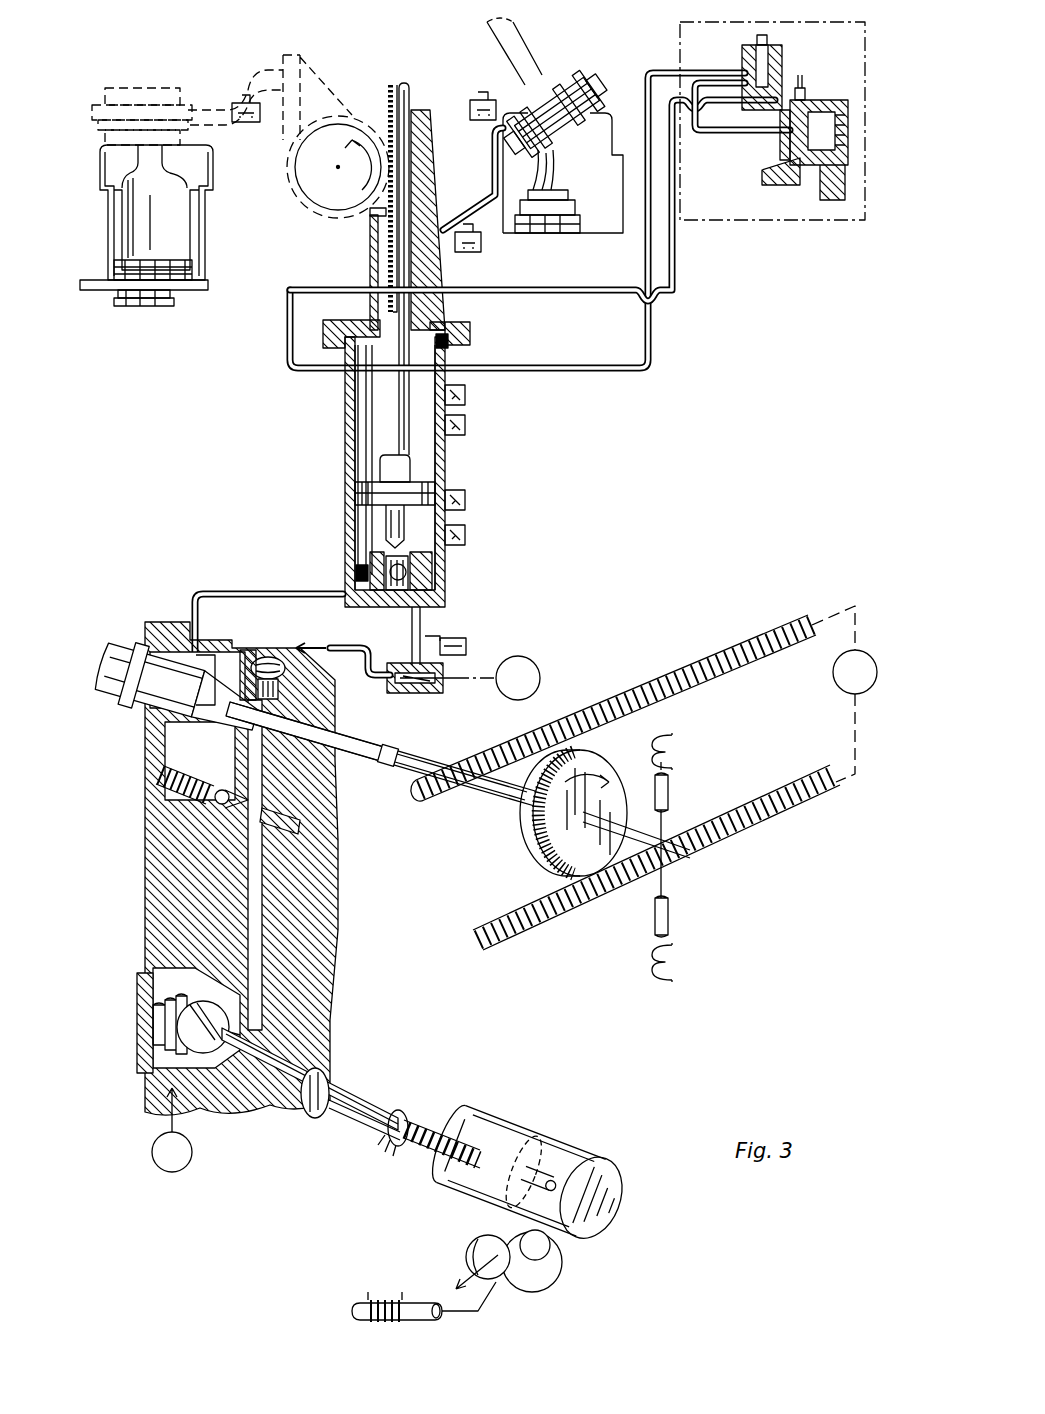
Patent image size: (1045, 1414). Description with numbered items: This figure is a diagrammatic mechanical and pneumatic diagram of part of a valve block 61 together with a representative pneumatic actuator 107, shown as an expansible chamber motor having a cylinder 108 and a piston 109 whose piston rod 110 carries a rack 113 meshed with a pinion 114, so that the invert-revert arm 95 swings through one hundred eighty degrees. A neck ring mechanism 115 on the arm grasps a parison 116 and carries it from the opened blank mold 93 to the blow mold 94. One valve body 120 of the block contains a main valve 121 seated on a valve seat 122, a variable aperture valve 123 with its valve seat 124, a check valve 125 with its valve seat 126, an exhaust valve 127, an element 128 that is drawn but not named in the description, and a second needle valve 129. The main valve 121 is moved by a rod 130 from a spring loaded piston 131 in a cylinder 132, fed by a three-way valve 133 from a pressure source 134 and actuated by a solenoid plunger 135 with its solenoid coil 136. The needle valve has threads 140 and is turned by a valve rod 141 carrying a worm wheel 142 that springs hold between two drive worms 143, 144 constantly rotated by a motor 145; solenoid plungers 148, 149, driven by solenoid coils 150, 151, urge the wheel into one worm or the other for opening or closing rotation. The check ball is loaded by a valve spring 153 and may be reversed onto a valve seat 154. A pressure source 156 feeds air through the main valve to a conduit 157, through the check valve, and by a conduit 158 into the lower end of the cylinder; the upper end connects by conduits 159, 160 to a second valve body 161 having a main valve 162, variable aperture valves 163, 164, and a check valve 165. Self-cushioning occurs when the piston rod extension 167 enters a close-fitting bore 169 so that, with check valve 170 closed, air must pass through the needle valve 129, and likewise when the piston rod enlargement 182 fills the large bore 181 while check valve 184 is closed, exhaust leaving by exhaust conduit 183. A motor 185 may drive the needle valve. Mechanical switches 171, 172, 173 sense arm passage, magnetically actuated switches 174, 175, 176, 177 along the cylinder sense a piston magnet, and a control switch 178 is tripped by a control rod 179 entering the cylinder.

The valve block 61 is at (414, 890).
The blank mold 93 is at (600, 118).
The blow mold 94 is at (100, 176).
The invert-revert arm 95 is at (473, 200).
The pneumatic actuator 107 is at (346, 415).
The cylinder 108 is at (346, 440).
The piston 109 is at (445, 470).
The piston rod 110 is at (405, 90).
The rack 113 is at (390, 90).
The pinion 114 is at (342, 215).
The neck ring mechanism 115 is at (570, 78).
The parison 116 is at (540, 24).
The valve body 120 is at (145, 852).
The main valve 121 is at (150, 1045).
The valve seat 122 is at (236, 1108).
The variable aperture valve 123 is at (200, 654).
The valve seat 124 is at (232, 688).
The check valve 125 is at (205, 800).
The valve seat 126 is at (232, 780).
The exhaust valve 127 is at (322, 1120).
The adjusting screw 128 is at (266, 658).
The needle valve 129 is at (436, 694).
The rod 130 is at (365, 1095).
The spring loaded piston 131 is at (513, 1116).
The cylinder 132 is at (572, 1142).
The three-way valve 133 is at (470, 1262).
The pressure source 134 is at (566, 1250).
The solenoid plunger 135 is at (420, 1322).
The solenoid coil 136 is at (392, 1300).
The threads 140 is at (142, 702).
The valve rod 141 is at (382, 746).
The worm wheel 142 is at (543, 862).
The drive worm 143 is at (700, 650).
The drive worm 144 is at (760, 800).
The motor 145 is at (862, 650).
The solenoid plunger 148 is at (670, 792).
The solenoid plunger 149 is at (672, 922).
The solenoid coil 150 is at (668, 748).
The solenoid coil 151 is at (672, 962).
The valve spring 153 is at (165, 782).
The valve seat 154 is at (222, 806).
The pressure source 156 is at (153, 1160).
The conduit 157 is at (300, 908).
The conduit 158 is at (196, 588).
The conduit 159 is at (528, 300).
The conduit 160 is at (556, 366).
The valve body 161 is at (866, 78).
The main valve 162 is at (850, 132).
The variable aperture valve 163 is at (799, 92).
The variable aperture valve 164 is at (756, 40).
The check valve 165 is at (780, 140).
The piston rod extension 167 is at (388, 525).
The bore 169 is at (405, 575).
The check valve 170 is at (358, 570).
The mechanical switch 171 is at (482, 246).
The mechanical switch 172 is at (488, 98).
The mechanical switch 173 is at (242, 122).
The magnetically actuated switch 174 is at (467, 535).
The magnetically actuated switch 175 is at (467, 500).
The magnetically actuated switch 176 is at (467, 425).
The magnetically actuated switch 177 is at (467, 395).
The control switch 178 is at (467, 640).
The control rod 179 is at (410, 630).
The large bore 181 is at (362, 384).
The piston rod enlargement 182 is at (382, 462).
The exhaust conduit 183 is at (782, 180).
The check valve 184 is at (452, 352).
The motor 185 is at (530, 657).